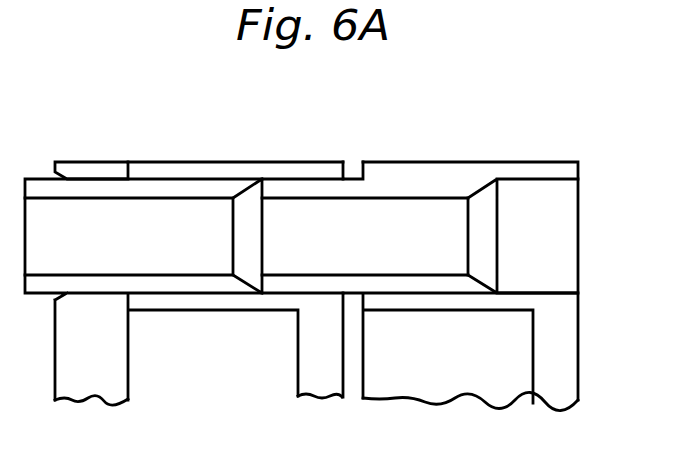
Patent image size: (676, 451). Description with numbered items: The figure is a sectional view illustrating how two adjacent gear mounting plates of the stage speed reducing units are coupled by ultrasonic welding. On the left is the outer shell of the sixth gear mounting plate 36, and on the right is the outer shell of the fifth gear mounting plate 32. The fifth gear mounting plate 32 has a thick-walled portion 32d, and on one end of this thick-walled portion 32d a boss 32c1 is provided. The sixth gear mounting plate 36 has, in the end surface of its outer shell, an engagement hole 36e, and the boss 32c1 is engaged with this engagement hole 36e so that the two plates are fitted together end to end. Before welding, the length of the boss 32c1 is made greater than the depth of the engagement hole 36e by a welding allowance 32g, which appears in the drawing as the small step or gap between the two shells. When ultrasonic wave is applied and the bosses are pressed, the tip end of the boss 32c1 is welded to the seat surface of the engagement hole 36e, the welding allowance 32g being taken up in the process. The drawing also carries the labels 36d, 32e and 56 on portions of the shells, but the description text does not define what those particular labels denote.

The flange ring 56 is at (94, 172).
The cylindrical portion of inner sleeve 36d is at (178, 172).
The boss 32c1 is at (293, 186).
The welding allowance 32g is at (352, 170).
The bore of outer sleeve 32e is at (402, 207).
The thick-walled portion 32d is at (472, 175).
The engagement hole 36e is at (212, 258).
The sixth gear mounting plate 36 is at (303, 370).
The fifth gear mounting plate 32 is at (566, 349).